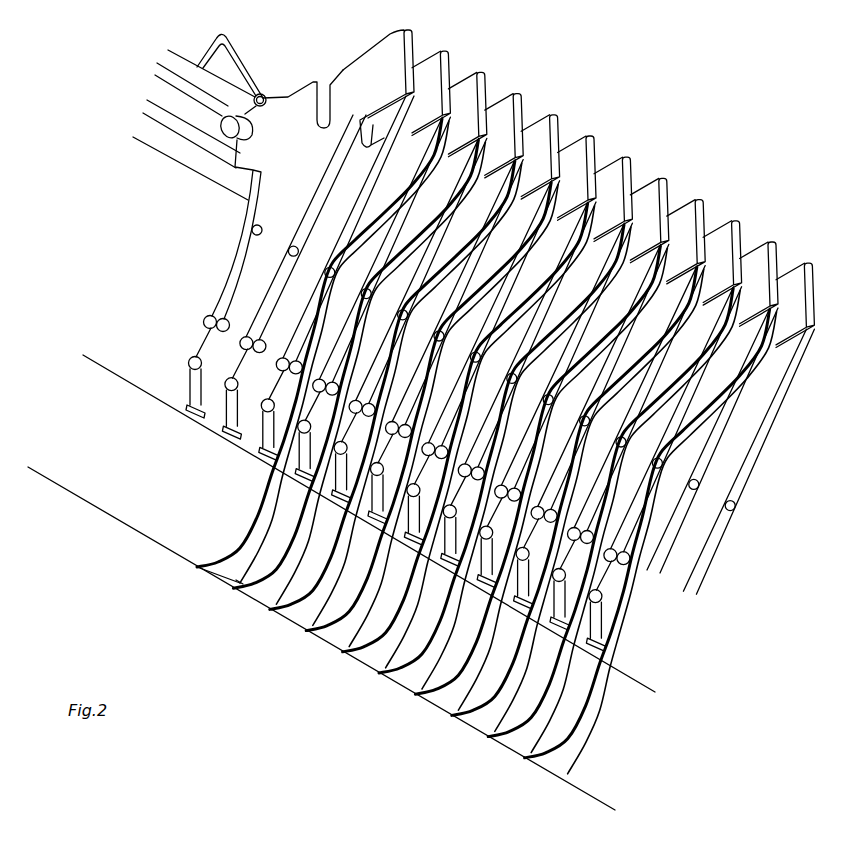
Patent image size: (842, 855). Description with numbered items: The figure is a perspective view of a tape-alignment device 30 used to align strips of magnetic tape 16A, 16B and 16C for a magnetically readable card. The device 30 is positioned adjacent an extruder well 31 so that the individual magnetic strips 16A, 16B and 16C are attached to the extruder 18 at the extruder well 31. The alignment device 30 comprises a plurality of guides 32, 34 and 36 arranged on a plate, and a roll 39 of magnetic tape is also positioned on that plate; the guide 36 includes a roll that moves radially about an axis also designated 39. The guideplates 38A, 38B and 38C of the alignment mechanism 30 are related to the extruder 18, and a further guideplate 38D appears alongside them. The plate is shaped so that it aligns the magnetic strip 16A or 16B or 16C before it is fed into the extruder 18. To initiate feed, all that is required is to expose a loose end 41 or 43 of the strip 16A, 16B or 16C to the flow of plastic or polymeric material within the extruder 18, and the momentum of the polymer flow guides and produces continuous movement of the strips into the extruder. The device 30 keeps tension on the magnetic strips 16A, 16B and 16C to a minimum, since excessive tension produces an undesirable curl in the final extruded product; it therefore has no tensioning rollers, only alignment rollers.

The strip of magnetic tape 16A is at (250, 530).
The strip of magnetic tape 16B is at (270, 606).
The strip of magnetic tape 16C is at (305, 627).
The extruder 18 is at (607, 739).
The tape-alignment device 30 is at (322, 59).
The extruder well 31 is at (605, 652).
The guide 32 is at (252, 228).
The guide 34 is at (205, 318).
The guide 36 is at (189, 360).
The guideplate 38A is at (378, 63).
The guideplate 38B is at (423, 60).
The guideplate 38C is at (462, 83).
The fourth plate 38D is at (498, 107).
The roll of magnetic tape 39 is at (387, 177).
The loose end 41 is at (195, 567).
The loose end 43 is at (238, 585).